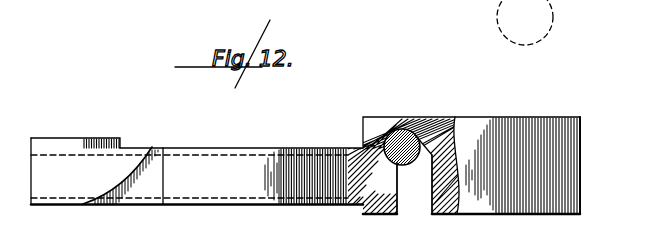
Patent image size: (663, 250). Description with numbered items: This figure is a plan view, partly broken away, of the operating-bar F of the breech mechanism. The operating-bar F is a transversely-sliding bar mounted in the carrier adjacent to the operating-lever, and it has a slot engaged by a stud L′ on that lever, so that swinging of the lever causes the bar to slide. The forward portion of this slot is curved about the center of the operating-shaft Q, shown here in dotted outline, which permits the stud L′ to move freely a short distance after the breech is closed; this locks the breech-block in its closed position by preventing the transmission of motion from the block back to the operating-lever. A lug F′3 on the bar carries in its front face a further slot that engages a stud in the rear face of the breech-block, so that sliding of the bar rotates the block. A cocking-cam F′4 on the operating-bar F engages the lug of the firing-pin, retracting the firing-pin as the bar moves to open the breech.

The operating-bar F is at (288, 151).
The lug F′3 is at (85, 137).
The cocking-cam F′4 is at (120, 183).
The stud L′ is at (403, 133).
The operating-shaft Q is at (528, 43).